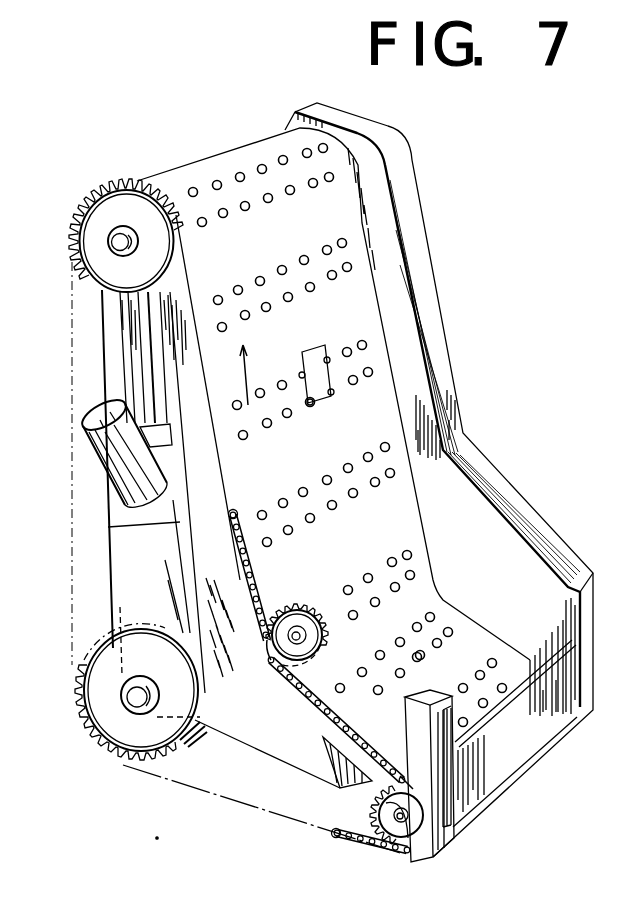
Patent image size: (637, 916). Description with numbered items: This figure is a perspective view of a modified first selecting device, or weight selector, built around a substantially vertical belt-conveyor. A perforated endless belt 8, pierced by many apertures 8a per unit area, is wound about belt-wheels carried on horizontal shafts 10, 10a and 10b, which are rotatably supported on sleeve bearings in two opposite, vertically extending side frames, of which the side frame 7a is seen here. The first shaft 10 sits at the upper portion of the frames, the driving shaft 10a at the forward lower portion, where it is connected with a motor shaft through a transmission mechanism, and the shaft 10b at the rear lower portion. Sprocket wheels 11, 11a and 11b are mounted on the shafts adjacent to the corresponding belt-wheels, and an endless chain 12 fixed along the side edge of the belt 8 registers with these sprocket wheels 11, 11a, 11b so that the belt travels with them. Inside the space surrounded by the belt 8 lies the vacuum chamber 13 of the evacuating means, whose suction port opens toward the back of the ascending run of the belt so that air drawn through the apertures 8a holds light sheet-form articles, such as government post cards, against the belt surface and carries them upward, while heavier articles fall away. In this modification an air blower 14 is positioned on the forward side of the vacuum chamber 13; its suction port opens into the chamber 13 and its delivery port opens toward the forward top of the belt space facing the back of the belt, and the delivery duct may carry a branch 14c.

The side frame 7a is at (514, 490).
The perforated endless belt 8 is at (190, 166).
The apertures 8a is at (513, 680).
The horizontal shaft 10 is at (130, 244).
The driving shaft 10a is at (135, 693).
The horizontal shaft 10b is at (408, 842).
The sprocket wheel 11 is at (74, 226).
The sprocket wheel 11a is at (173, 757).
The sprocket wheel 11b is at (382, 808).
The endless chain 12 is at (237, 513).
The vacuum chamber 13 is at (267, 744).
The air blower 14 is at (185, 567).
The branch 14c is at (152, 455).